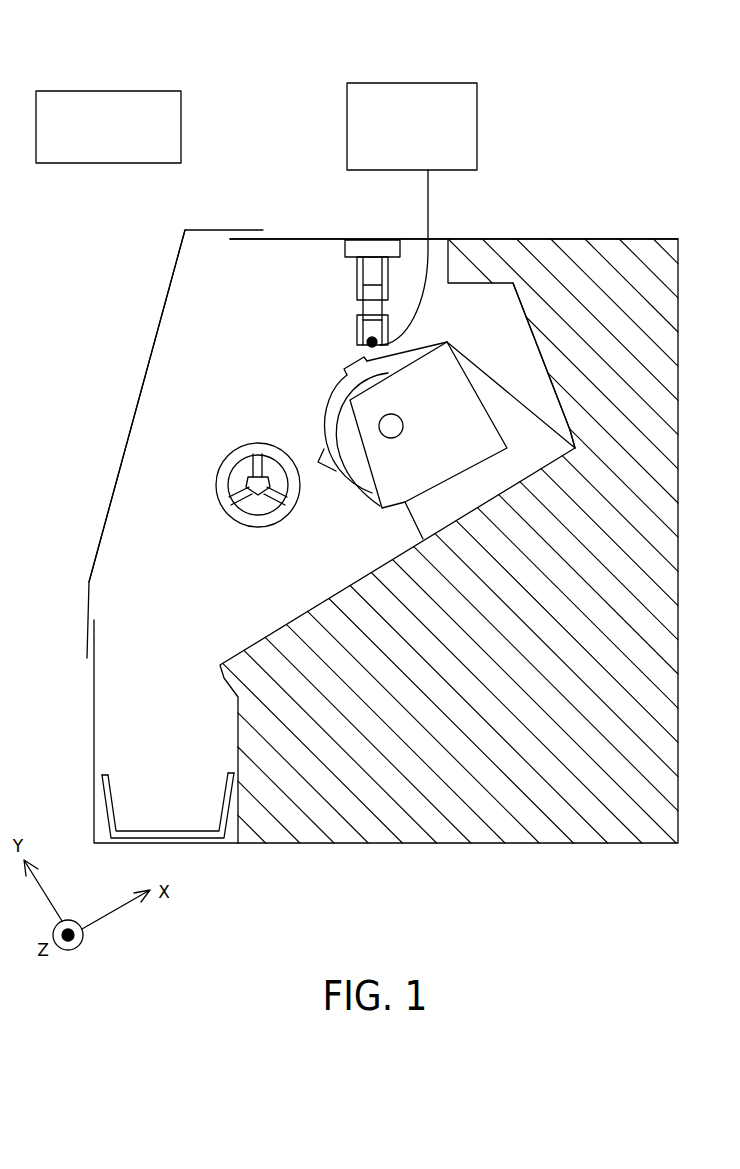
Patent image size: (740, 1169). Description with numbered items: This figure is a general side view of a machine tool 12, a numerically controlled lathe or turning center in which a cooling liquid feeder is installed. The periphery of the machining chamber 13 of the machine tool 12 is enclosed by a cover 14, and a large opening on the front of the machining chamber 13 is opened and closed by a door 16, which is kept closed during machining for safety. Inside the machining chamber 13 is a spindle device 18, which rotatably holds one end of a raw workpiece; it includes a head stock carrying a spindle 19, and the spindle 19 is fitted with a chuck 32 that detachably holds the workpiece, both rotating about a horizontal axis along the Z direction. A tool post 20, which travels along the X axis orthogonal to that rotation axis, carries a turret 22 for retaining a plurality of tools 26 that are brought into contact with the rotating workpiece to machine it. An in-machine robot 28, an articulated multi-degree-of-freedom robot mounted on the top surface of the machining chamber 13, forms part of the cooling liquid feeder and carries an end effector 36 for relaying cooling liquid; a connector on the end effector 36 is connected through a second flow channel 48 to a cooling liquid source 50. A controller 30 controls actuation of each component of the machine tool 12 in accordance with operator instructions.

The machine tool 12 is at (612, 205).
The machining chamber 13 is at (244, 312).
The cover 14 is at (310, 237).
The door 16 is at (158, 323).
The spindle device 18 is at (215, 501).
The spindle 19 is at (224, 471).
The tool post 20 is at (467, 370).
The turret 22 is at (360, 488).
The tool 26 is at (325, 467).
The in-machine robot 28 is at (355, 288).
The controller 30 is at (50, 89).
The chuck 32 is at (242, 518).
The end effector 36 is at (366, 343).
The second flow channel 48 is at (430, 213).
The cooling liquid source 50 is at (370, 81).